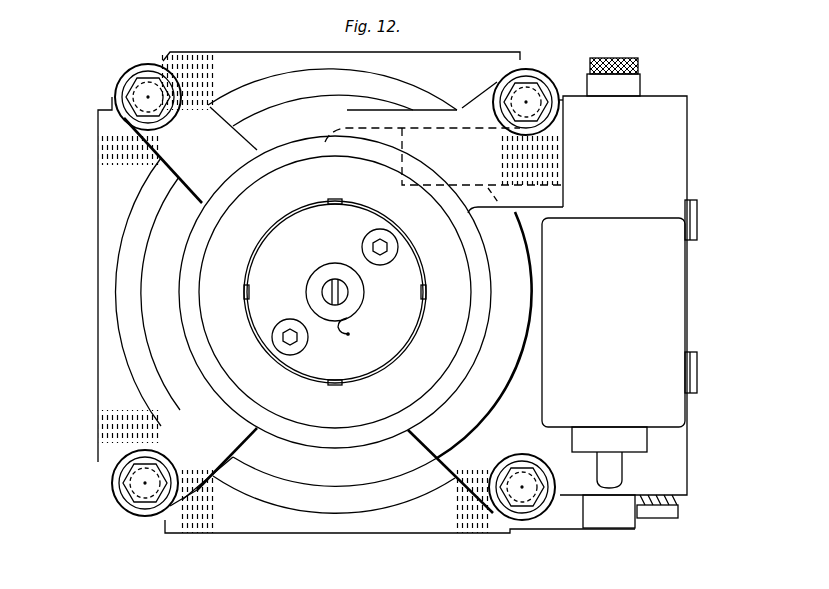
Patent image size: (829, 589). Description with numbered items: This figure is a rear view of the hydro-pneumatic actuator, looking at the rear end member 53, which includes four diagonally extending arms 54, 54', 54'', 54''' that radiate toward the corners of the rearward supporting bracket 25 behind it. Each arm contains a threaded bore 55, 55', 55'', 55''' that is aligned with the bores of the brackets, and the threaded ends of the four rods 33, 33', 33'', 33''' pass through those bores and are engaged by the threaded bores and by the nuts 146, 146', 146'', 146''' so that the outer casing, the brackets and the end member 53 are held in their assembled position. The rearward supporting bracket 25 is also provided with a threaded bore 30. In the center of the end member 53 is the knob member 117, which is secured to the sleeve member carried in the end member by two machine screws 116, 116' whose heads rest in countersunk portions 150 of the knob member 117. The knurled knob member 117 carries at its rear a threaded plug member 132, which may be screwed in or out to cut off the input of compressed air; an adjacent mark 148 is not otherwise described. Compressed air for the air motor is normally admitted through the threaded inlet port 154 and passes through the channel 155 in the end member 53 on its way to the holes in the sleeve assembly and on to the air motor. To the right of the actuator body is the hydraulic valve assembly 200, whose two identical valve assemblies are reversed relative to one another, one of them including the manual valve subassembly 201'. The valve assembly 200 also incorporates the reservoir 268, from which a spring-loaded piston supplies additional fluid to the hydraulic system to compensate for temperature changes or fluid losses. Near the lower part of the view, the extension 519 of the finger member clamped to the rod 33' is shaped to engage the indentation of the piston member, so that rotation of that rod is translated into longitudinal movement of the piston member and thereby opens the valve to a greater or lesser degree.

The rearward supporting bracket 25 is at (98, 312).
The threaded bore 30 is at (465, 62).
The rod 33 is at (527, 523).
The rod 33' is at (539, 81).
The rod 33'' is at (136, 75).
The rod 33''' is at (121, 496).
The end member 53 is at (213, 262).
The diagonally extending arm 54 is at (121, 97).
The diagonally extending arm 54' is at (526, 74).
The diagonally extending arm 54'' is at (510, 516).
The diagonally extending arm 54''' is at (145, 514).
The threaded bore 55 is at (162, 67).
The threaded bore 55' is at (562, 107).
The threaded bore 55'' is at (509, 471).
The threaded bore 55''' is at (106, 483).
The machine screw 116 is at (412, 242).
The machine screw 116' is at (273, 360).
The knob member 117 is at (312, 223).
The threaded plug member 132 is at (327, 272).
The nut 146 is at (118, 88).
The nut 146' is at (566, 82).
The nut 146'' is at (547, 455).
The nut 146''' is at (119, 508).
The slot indicator 148 is at (356, 336).
The countersunk portion 150 is at (385, 232).
The threaded inlet port 154 is at (572, 166).
The channel 155 is at (543, 233).
The hydraulic valve assembly 200 is at (646, 536).
The manual valve subassembly 201' is at (650, 77).
The reservoir 268 is at (670, 323).
The extension 519 is at (572, 530).